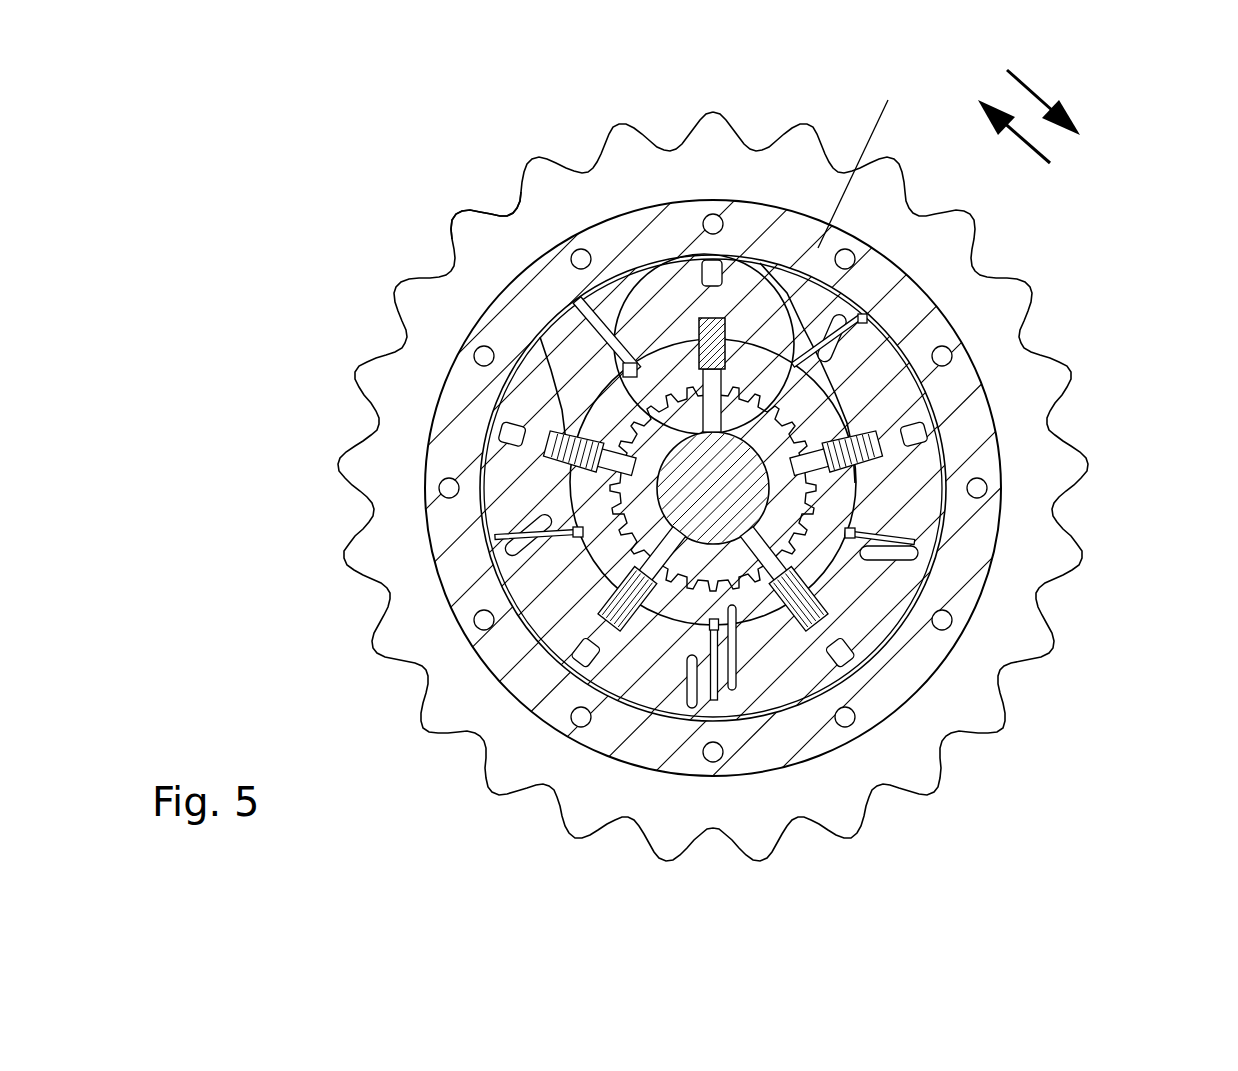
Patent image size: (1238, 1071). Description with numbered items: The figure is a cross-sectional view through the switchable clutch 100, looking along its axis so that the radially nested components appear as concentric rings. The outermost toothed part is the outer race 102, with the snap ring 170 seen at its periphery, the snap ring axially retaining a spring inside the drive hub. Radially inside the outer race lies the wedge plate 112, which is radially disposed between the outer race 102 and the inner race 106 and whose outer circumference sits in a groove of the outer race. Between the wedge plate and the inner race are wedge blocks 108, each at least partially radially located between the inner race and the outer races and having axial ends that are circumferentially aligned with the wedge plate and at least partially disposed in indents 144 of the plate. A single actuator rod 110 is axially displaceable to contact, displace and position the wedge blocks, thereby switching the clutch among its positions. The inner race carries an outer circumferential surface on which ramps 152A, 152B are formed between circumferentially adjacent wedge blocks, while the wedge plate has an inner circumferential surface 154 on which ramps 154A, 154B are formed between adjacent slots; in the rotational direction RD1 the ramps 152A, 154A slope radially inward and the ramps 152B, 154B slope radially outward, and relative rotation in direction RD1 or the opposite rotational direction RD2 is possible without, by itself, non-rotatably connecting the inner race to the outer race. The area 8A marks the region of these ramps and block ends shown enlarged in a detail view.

The switchable clutch 100 is at (619, 481).
The outer race 102 is at (643, 205).
The inner race 106 is at (870, 505).
The wedge block 108 is at (588, 355).
The actuator rod 110 is at (848, 545).
The wedge plate 112 is at (885, 372).
The indent 144 is at (731, 250).
The ramp 152A is at (732, 610).
The ramp 152B is at (667, 622).
The inner circumferential surface 154 is at (641, 636).
The ramp 154A is at (782, 620).
The ramp 154B is at (697, 715).
The snap ring 170 is at (478, 212).
The detail area 8A is at (884, 151).
The rotational direction RD1 is at (1030, 87).
The rotational direction RD2 is at (1033, 155).